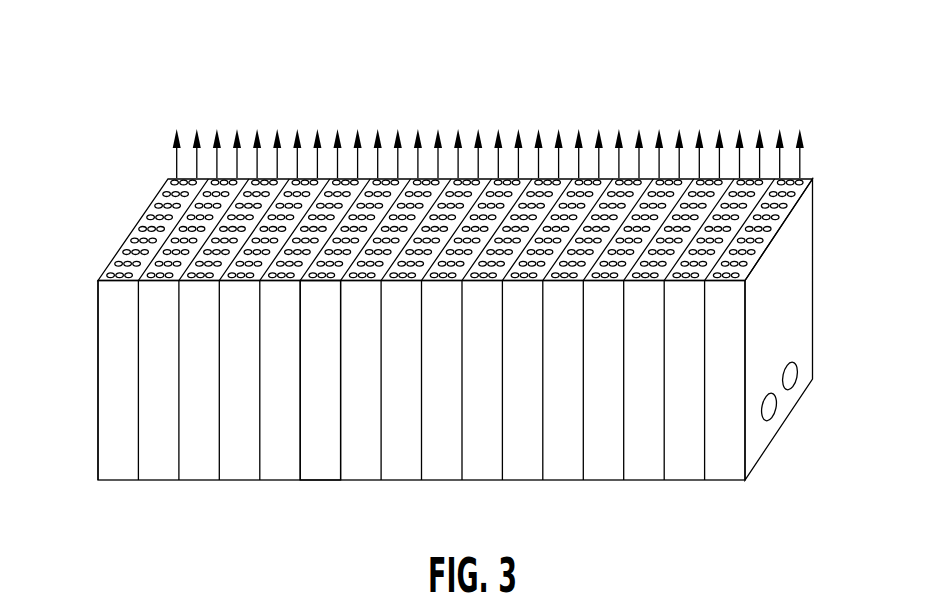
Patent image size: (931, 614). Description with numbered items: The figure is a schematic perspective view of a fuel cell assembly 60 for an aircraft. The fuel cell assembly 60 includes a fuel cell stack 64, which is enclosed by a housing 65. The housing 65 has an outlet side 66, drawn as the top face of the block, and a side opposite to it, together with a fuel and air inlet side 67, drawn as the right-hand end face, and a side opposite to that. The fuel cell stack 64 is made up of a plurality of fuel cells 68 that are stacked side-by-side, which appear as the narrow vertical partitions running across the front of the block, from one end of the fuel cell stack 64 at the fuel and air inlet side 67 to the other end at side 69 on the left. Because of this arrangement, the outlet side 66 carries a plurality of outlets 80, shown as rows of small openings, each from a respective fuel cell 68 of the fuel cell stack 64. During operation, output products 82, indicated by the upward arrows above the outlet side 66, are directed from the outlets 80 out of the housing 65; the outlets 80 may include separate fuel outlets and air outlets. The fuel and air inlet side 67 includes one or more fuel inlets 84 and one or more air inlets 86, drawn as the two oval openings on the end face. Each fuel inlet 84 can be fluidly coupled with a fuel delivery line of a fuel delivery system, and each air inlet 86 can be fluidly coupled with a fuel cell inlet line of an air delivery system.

The fuel cell assembly 60 is at (154, 64).
The fuel cell stack 64 is at (63, 324).
The housing 65 is at (134, 227).
The outlet side 66 is at (746, 174).
The fuel and air inlet side 67 is at (792, 321).
The fuel cell 68 is at (328, 442).
The side 69 is at (95, 445).
The outlets 80 is at (461, 190).
The output products 82 is at (170, 156).
The fuel inlets 84 is at (767, 423).
The air inlets 86 is at (788, 391).